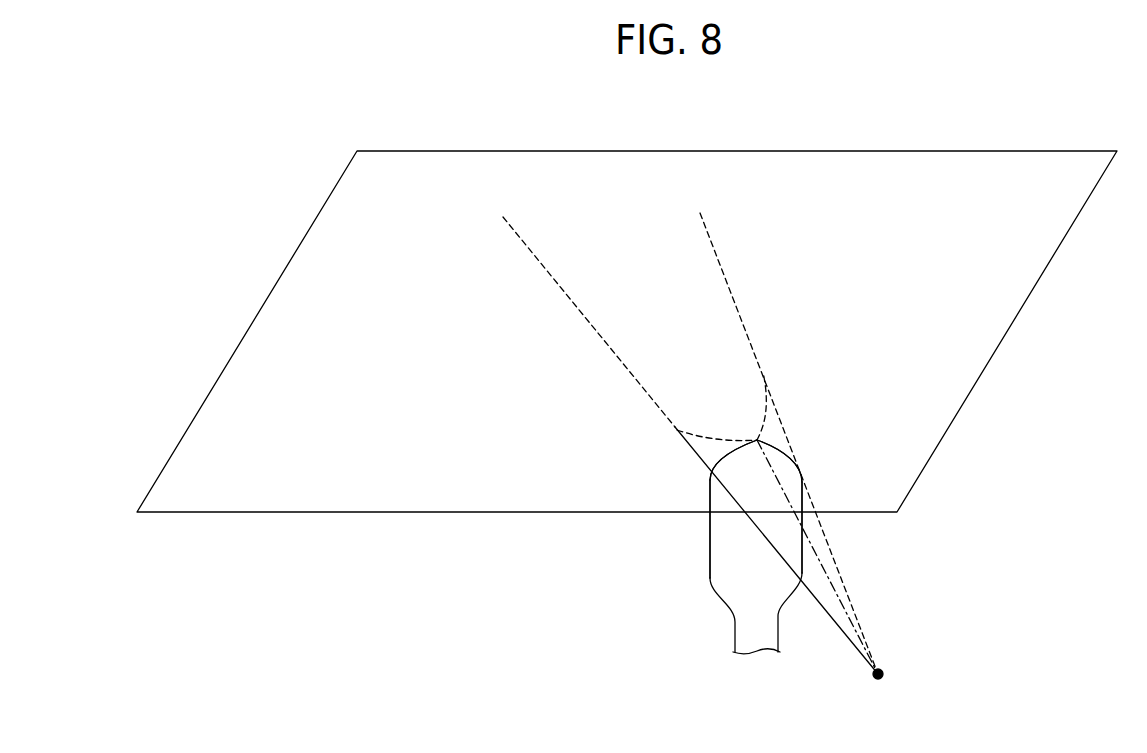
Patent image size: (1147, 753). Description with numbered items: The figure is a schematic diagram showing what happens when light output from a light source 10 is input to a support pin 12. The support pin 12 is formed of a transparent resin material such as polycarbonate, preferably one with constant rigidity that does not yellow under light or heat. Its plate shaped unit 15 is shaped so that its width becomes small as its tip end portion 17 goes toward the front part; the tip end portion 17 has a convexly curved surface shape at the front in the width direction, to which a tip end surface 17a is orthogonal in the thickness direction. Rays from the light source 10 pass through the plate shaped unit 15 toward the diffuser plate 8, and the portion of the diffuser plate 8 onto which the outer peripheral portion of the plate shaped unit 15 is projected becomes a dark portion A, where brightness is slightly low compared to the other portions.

The diffuser plate 8 is at (909, 164).
The dark portion A is at (712, 240).
The light source 10 is at (885, 669).
The support pin 12 is at (690, 585).
The plate shaped unit 15 is at (723, 528).
The tip end portion 17 is at (780, 463).
The tip end surface 17a is at (760, 440).